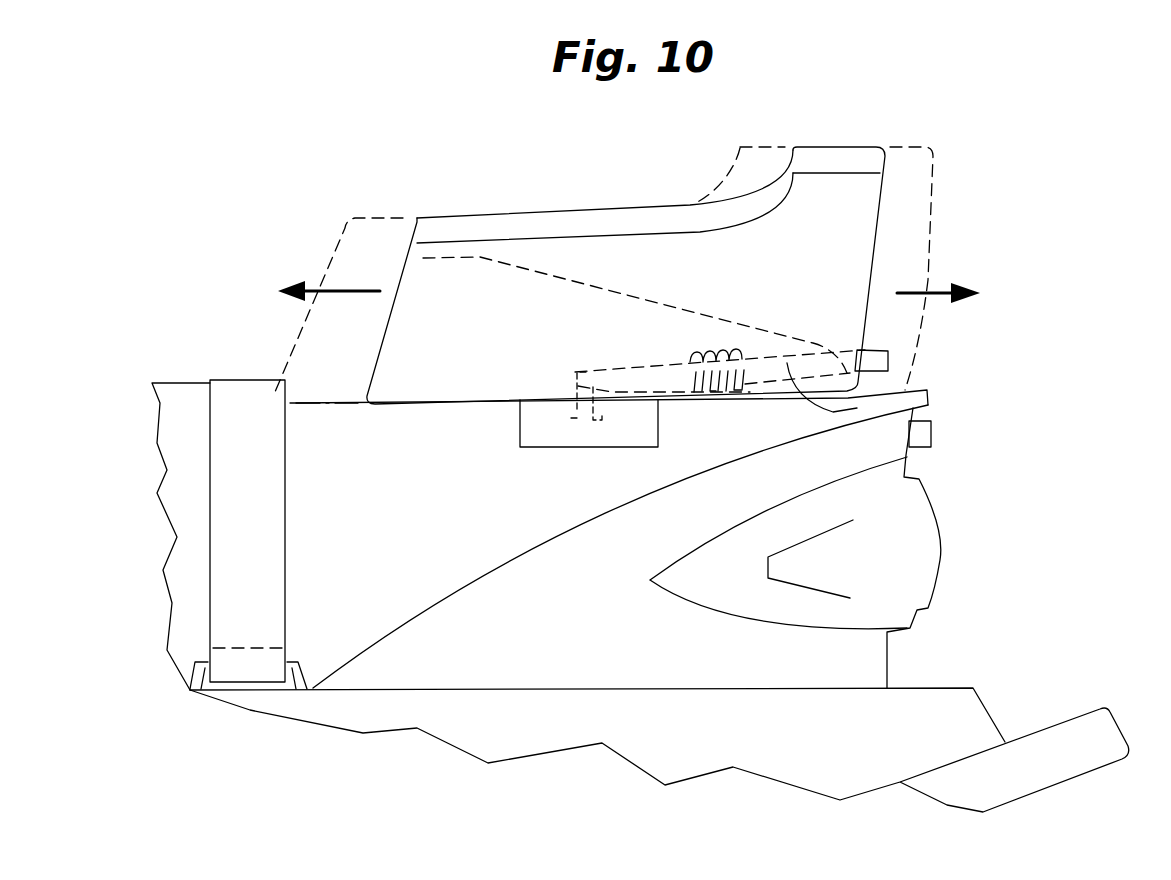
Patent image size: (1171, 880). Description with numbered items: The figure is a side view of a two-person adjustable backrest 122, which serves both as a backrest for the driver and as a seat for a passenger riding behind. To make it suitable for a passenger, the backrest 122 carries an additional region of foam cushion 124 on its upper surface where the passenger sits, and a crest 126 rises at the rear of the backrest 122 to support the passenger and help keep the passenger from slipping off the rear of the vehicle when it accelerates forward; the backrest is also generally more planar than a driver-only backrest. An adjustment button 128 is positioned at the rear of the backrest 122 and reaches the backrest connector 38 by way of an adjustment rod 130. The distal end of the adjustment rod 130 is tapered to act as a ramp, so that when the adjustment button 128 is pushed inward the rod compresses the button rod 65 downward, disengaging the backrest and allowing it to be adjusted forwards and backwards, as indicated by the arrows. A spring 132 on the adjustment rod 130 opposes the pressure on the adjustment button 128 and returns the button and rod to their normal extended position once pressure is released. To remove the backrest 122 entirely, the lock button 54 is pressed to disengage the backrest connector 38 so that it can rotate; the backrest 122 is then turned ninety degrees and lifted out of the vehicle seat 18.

The vehicle seat 18 is at (432, 570).
The backrest connector 38 is at (533, 420).
The lock button 54 is at (932, 432).
The button rod 65 is at (590, 420).
The two-person adjustable backrest 122 is at (470, 277).
The foam cushion 124 is at (670, 223).
The crest 126 is at (857, 203).
The adjustment button 128 is at (888, 357).
The adjustment rod 130 is at (927, 393).
The spring 132 is at (747, 383).